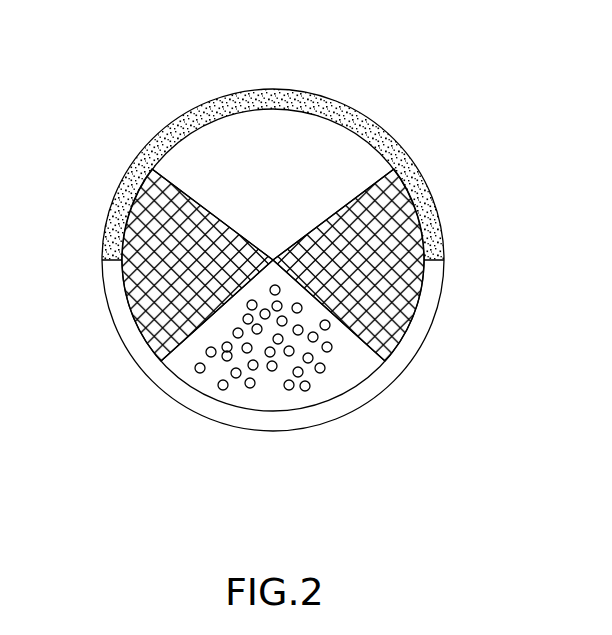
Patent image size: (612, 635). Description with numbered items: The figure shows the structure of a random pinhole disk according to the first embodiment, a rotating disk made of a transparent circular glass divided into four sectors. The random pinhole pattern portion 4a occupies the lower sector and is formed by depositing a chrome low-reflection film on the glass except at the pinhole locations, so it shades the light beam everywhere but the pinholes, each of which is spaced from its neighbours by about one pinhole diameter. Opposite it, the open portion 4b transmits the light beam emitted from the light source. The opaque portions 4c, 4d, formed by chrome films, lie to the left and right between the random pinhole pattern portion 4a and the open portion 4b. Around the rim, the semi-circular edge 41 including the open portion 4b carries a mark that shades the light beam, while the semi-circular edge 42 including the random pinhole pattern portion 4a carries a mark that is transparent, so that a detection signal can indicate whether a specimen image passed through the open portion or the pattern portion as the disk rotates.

The random pinhole pattern portion 4a is at (287, 398).
The open portion 4b is at (267, 127).
The opaque portion 4c is at (152, 338).
The opaque portion 4d is at (395, 340).
The semi-circular edge 41 is at (132, 168).
The semi-circular edge 42 is at (352, 403).